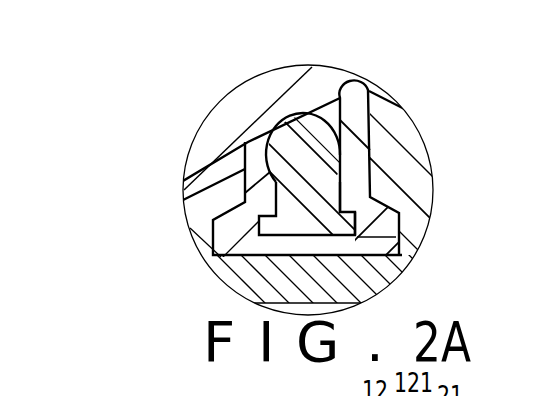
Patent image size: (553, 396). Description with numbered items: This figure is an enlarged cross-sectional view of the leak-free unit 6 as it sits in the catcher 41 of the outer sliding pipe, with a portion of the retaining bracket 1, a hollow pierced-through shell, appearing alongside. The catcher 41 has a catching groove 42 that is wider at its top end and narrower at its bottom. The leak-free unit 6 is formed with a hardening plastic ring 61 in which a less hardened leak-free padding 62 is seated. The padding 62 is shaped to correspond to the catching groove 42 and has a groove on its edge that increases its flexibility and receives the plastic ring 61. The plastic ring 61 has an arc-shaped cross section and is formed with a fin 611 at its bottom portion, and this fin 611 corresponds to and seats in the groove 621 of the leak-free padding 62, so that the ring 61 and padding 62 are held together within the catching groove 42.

The retaining bracket 1 is at (253, 103).
The catcher 41 is at (232, 193).
The catching groove 42 is at (318, 256).
The leak-free unit 6 is at (375, 158).
The plastic ring 61 is at (342, 125).
The fin 611 is at (310, 230).
The leak-free padding 62 is at (350, 152).
The groove 621 is at (426, 222).